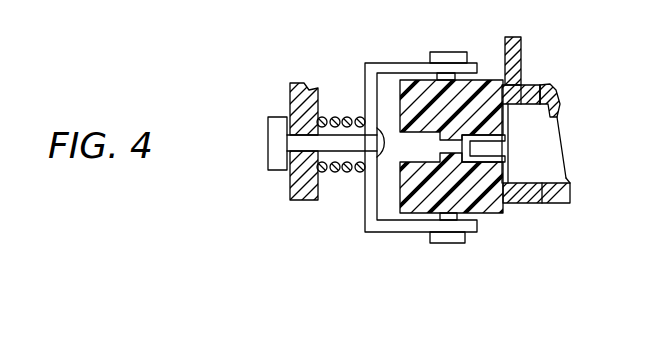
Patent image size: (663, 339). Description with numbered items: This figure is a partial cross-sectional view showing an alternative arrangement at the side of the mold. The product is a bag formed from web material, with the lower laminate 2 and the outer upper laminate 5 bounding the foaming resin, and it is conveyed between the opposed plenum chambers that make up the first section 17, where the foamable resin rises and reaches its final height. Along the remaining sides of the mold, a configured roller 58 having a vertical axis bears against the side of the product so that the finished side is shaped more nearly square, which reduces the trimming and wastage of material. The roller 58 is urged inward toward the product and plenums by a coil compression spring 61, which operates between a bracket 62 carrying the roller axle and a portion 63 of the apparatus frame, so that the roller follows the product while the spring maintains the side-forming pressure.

The lower laminate 2 is at (563, 178).
The outer upper laminate 5 is at (555, 118).
The first section 17 is at (534, 85).
The configured roller 58 is at (487, 81).
The coil compression spring 61 is at (348, 173).
The bracket 62 is at (372, 232).
The portion of the apparatus frame 63 is at (310, 200).